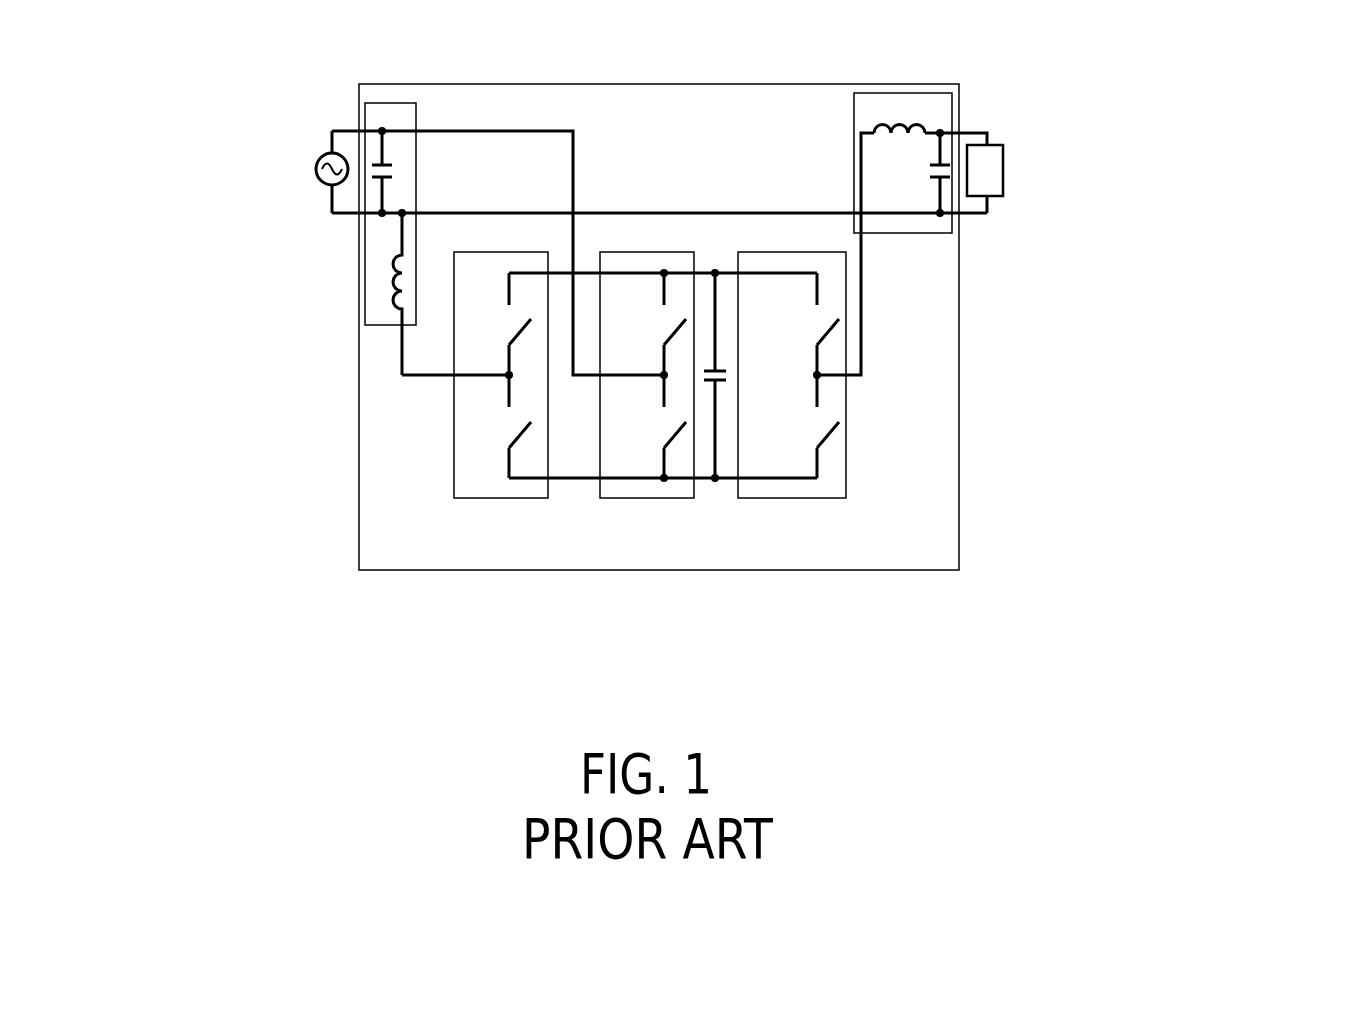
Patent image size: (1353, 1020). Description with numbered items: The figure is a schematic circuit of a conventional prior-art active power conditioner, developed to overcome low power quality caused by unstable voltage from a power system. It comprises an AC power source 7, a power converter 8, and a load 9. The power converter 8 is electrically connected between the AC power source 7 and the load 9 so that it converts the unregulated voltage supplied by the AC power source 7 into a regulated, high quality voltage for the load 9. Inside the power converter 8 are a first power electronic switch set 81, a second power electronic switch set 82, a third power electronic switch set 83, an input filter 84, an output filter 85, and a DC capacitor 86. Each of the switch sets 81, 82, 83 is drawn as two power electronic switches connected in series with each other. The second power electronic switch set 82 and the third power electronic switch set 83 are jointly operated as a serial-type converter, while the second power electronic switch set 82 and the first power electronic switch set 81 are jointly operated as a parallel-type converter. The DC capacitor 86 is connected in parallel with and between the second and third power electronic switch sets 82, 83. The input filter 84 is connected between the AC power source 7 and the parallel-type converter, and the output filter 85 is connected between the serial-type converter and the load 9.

The AC power source 7 is at (323, 177).
The power converter 8 is at (959, 507).
The load 9 is at (997, 150).
The first power electronic switch set 81 is at (453, 485).
The second power electronic switch set 82 is at (642, 498).
The third power electronic switch set 83 is at (822, 498).
The input filter 84 is at (363, 302).
The output filter 85 is at (903, 236).
The DC capacitor 86 is at (723, 383).